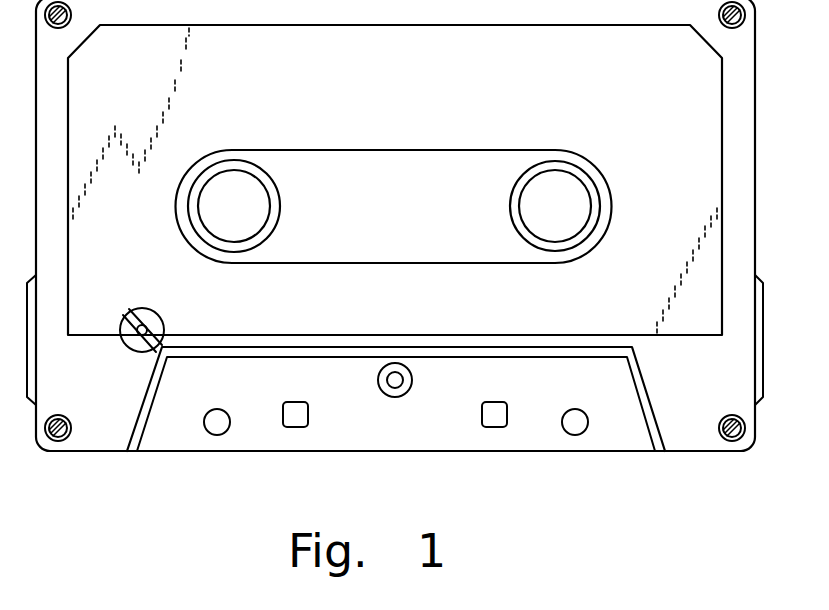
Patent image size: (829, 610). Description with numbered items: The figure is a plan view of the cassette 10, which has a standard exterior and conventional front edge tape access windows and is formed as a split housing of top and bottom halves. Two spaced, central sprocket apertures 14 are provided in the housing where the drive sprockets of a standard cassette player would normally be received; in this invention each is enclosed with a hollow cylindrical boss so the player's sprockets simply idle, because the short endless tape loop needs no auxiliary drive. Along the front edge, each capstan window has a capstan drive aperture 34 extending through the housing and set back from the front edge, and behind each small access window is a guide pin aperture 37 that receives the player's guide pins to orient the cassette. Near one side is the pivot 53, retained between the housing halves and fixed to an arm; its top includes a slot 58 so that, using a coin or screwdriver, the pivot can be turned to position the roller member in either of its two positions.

The cassette 10 is at (690, 477).
The sprocket apertures 14 is at (205, 191).
The slot 58 is at (127, 311).
The pivot 53 is at (135, 352).
The capstan drive aperture 34 is at (223, 417).
The guide pin aperture 37 is at (297, 421).